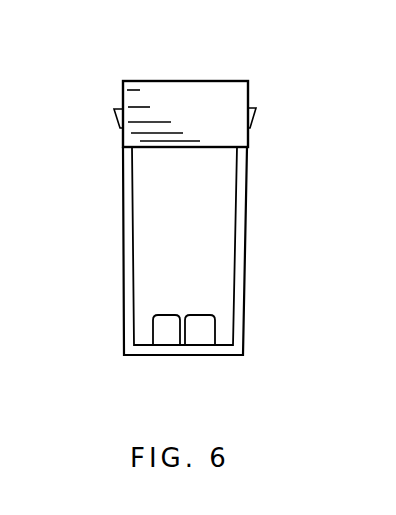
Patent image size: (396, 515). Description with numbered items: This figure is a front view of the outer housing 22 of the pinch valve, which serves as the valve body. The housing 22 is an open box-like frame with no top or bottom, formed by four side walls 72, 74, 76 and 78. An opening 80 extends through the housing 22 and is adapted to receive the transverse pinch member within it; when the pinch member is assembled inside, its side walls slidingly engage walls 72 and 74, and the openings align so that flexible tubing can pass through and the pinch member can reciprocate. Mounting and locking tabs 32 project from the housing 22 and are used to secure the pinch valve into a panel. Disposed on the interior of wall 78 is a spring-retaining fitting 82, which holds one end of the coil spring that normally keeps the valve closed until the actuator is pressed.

The outer housing 22 is at (254, 75).
The mounting and locking tab 32 is at (117, 118).
The side wall 72 is at (124, 217).
The side wall 74 is at (238, 207).
The side wall 76 is at (184, 81).
The side wall 78 is at (143, 348).
The opening 80 is at (195, 272).
The spring-retaining fitting 82 is at (198, 328).